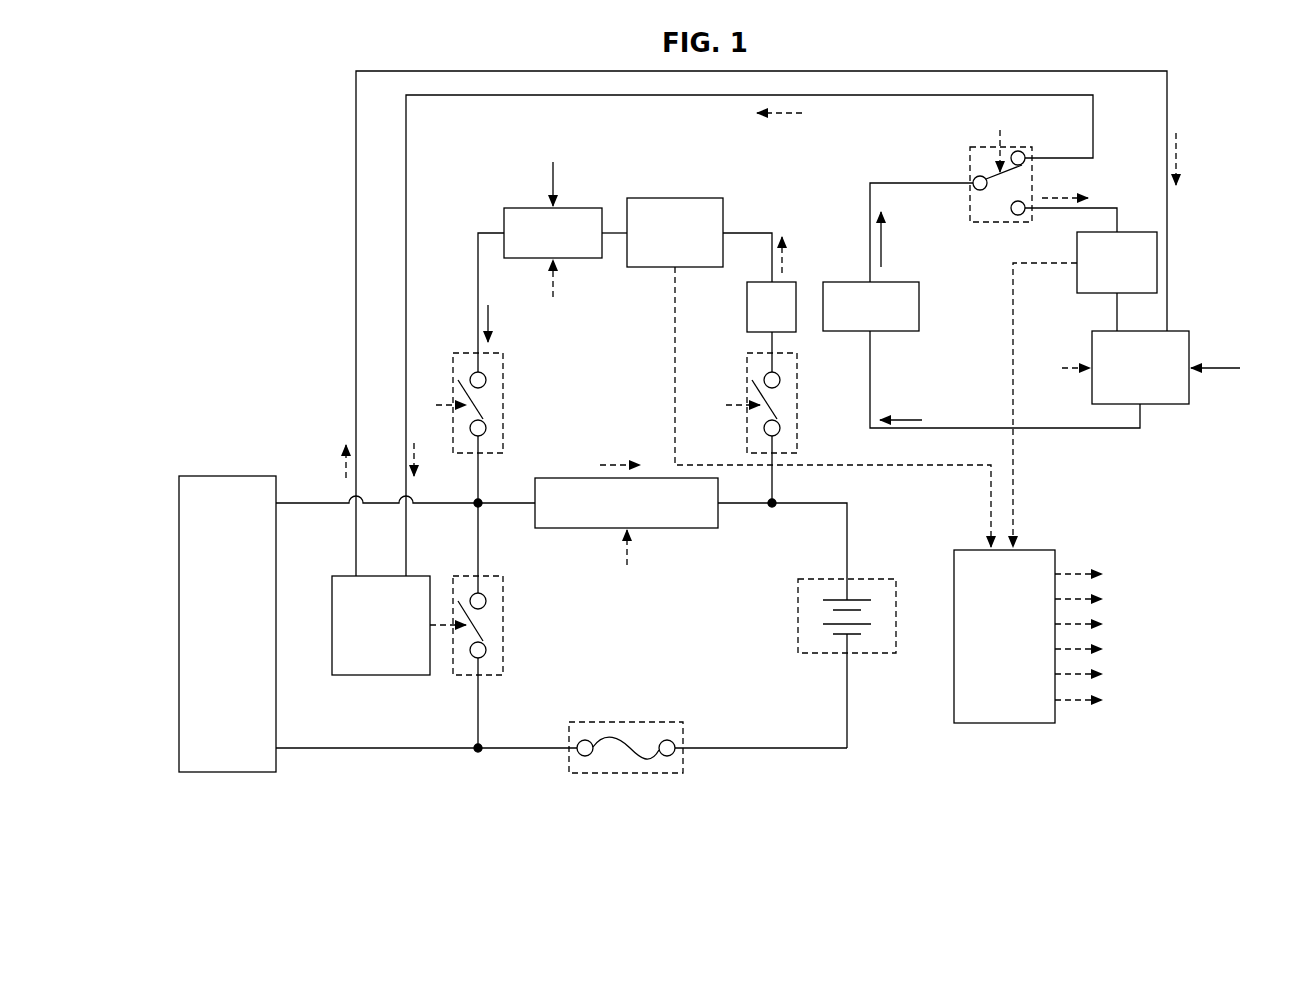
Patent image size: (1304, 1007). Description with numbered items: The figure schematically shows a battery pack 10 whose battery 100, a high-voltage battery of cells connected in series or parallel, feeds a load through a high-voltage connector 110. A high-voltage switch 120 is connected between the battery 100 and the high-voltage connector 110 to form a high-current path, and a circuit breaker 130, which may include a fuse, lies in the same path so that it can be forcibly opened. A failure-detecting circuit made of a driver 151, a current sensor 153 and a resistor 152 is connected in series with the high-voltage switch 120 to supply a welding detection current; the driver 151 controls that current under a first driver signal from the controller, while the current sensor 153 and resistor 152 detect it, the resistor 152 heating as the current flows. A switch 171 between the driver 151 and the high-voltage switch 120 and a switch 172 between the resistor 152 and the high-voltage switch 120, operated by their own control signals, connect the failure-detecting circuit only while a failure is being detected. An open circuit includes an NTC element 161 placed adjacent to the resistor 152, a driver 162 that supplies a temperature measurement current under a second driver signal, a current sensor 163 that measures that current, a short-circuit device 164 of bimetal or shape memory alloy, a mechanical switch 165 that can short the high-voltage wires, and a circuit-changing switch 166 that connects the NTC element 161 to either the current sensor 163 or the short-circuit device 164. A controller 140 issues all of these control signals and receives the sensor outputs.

The battery pack 10 is at (236, 110).
The battery 100 is at (884, 653).
The high-voltage connector 110 is at (218, 476).
The high-voltage switch 120 is at (703, 528).
The circuit breaker 130 is at (628, 773).
The controller 140 is at (1003, 723).
The driver 151 is at (504, 216).
The resistor 152 is at (747, 307).
The current sensor 153 is at (673, 198).
The NTC element 161 is at (919, 307).
The driver 162 is at (1175, 404).
The current sensor 163 is at (1077, 290).
The short-circuit device 164 is at (380, 675).
The mechanical switch 165 is at (503, 625).
The circuit-changing switch 166 is at (970, 158).
The switch 171 is at (503, 405).
The switch 172 is at (797, 405).